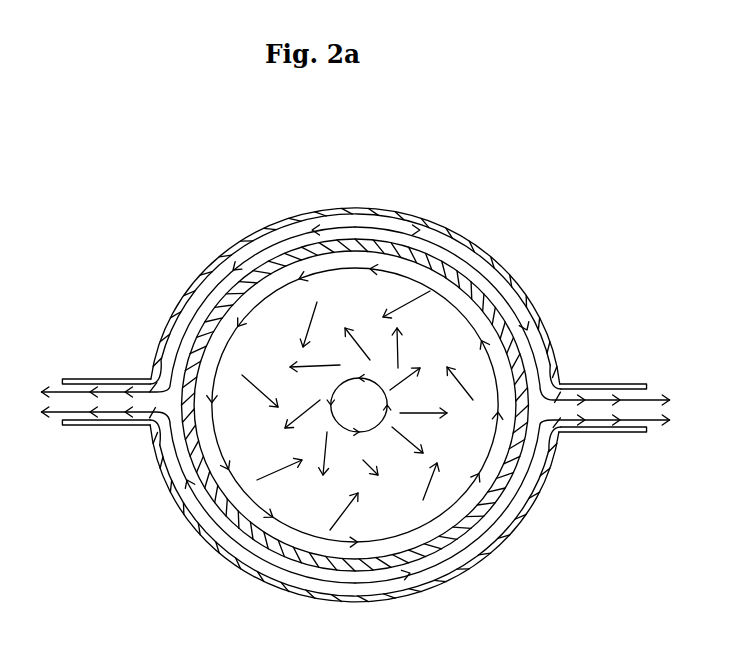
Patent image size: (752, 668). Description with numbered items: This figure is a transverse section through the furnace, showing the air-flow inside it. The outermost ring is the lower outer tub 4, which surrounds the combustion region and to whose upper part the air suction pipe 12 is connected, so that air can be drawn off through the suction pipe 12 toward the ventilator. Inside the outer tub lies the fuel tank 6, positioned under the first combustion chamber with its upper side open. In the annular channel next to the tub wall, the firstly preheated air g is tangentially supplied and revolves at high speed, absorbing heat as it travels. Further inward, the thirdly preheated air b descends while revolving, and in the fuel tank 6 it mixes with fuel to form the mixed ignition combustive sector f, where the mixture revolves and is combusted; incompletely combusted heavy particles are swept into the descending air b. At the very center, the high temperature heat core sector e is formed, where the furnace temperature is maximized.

The lower outer tub 4 is at (195, 533).
The fuel tank 6 is at (200, 326).
The air suction pipe 12 is at (87, 430).
The high temperature heat core sector e is at (363, 402).
The mixed ignition combustive sector f is at (358, 484).
The thirdly preheated air b is at (358, 540).
The firstly preheated air g is at (353, 584).